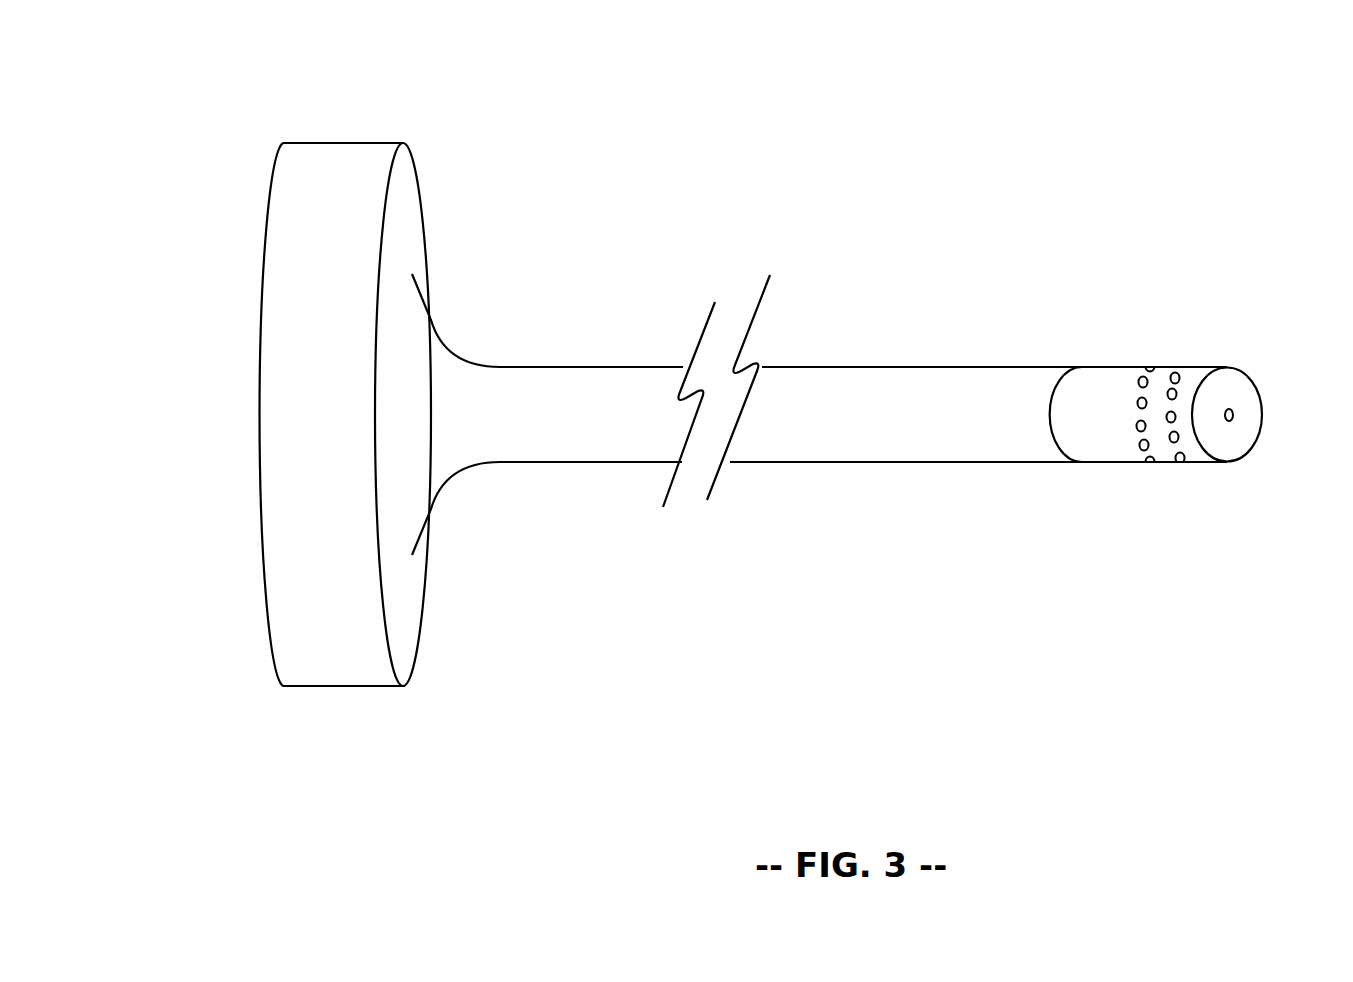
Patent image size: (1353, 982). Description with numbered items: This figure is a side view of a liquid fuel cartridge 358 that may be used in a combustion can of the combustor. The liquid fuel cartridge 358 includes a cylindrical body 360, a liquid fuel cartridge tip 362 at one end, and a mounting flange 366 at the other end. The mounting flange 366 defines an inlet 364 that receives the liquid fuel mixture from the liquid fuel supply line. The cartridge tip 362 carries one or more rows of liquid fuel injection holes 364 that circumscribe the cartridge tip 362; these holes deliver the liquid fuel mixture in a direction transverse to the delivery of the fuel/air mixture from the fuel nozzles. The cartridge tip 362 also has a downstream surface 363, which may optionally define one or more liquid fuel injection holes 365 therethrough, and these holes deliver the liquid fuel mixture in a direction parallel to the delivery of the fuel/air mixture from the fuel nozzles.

The liquid fuel cartridge 358 is at (1087, 167).
The cylindrical body 360 is at (938, 366).
The liquid fuel cartridge tip 362 is at (1110, 367).
The downstream surface 363 is at (1240, 380).
The liquid fuel injection holes 364 is at (260, 597).
The liquid fuel injection holes 365 is at (1231, 420).
The mounting flange 366 is at (408, 172).